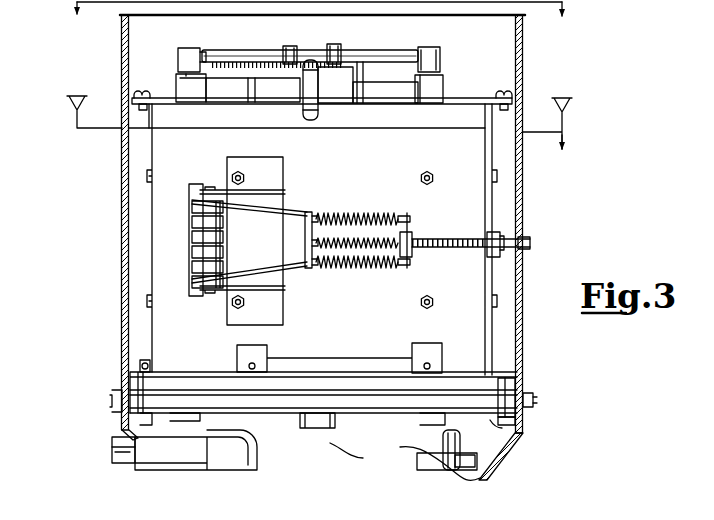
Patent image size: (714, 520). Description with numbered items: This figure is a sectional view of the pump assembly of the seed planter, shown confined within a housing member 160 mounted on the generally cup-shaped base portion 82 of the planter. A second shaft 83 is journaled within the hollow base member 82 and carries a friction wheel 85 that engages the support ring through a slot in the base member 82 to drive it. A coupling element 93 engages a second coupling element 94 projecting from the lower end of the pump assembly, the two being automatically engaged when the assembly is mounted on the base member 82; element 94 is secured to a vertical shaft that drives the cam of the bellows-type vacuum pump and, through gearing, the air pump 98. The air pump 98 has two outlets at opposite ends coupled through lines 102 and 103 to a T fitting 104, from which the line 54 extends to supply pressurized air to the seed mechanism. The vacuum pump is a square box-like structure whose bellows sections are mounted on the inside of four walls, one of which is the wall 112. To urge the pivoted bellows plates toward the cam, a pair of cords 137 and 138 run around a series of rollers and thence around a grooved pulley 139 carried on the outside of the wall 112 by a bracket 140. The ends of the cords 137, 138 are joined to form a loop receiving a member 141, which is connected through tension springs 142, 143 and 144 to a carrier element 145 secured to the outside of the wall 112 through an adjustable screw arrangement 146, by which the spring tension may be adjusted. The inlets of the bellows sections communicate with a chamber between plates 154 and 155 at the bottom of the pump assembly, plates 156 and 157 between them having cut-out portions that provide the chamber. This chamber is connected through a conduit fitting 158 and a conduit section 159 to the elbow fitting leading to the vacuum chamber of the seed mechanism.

The line 54 is at (319, 108).
The base portion 82 is at (489, 475).
The second shaft 83 is at (494, 466).
The friction wheel 85 is at (462, 430).
The coupling element 93 is at (363, 458).
The second coupling element 94 is at (336, 421).
The air pump 98 is at (381, 80).
The line 102 is at (233, 55).
The line 103 is at (412, 52).
The T fitting 104 is at (298, 52).
The wall 112 is at (463, 152).
The cord 137 is at (292, 208).
The cord 138 is at (293, 272).
The grooved pulley 139 is at (202, 237).
The bracket 140 is at (268, 190).
The member 141 is at (313, 215).
The tension spring 142 is at (368, 213).
The tension spring 143 is at (375, 249).
The tension spring 144 is at (353, 270).
The carrier element 145 is at (413, 236).
The adjustable screw arrangement 146 is at (469, 258).
The plate 154 is at (507, 378).
The plate 155 is at (510, 426).
The plate 156 is at (510, 392).
The plate 157 is at (537, 400).
The conduit fitting 158 is at (238, 453).
The conduit section 159 is at (187, 455).
The housing member 160 is at (519, 297).